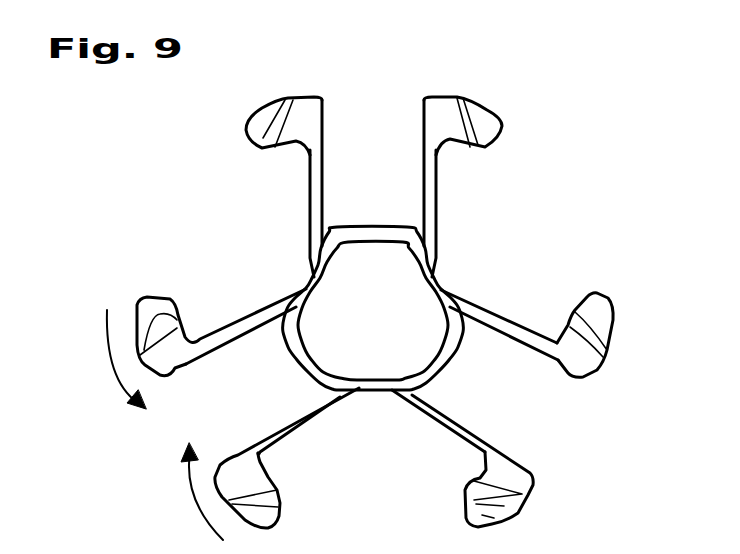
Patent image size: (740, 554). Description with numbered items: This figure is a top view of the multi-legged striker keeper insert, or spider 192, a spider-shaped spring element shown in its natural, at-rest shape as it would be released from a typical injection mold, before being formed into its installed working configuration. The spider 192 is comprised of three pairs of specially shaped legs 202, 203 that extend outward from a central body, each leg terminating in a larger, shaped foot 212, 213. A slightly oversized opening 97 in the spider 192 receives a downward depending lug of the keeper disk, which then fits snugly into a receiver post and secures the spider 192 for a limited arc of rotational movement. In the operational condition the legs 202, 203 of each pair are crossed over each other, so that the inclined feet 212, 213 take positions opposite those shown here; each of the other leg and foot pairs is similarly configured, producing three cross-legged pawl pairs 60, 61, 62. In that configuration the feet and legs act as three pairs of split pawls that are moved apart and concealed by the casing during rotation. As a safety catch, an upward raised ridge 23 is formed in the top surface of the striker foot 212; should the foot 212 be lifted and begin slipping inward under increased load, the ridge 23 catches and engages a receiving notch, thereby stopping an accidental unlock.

The multi-legged striker keeper insert (spider) 192 is at (592, 143).
The cross-legged pawl pair 61 is at (440, 112).
The upward raised ridge 23 is at (460, 117).
The opening 97 is at (333, 318).
The cross-legged pawl pair 60 is at (172, 355).
The cross-legged pawl pair 62 is at (577, 370).
The leg 202 is at (480, 310).
The leg 203 is at (452, 423).
The foot 212 is at (603, 295).
The foot 213 is at (505, 521).